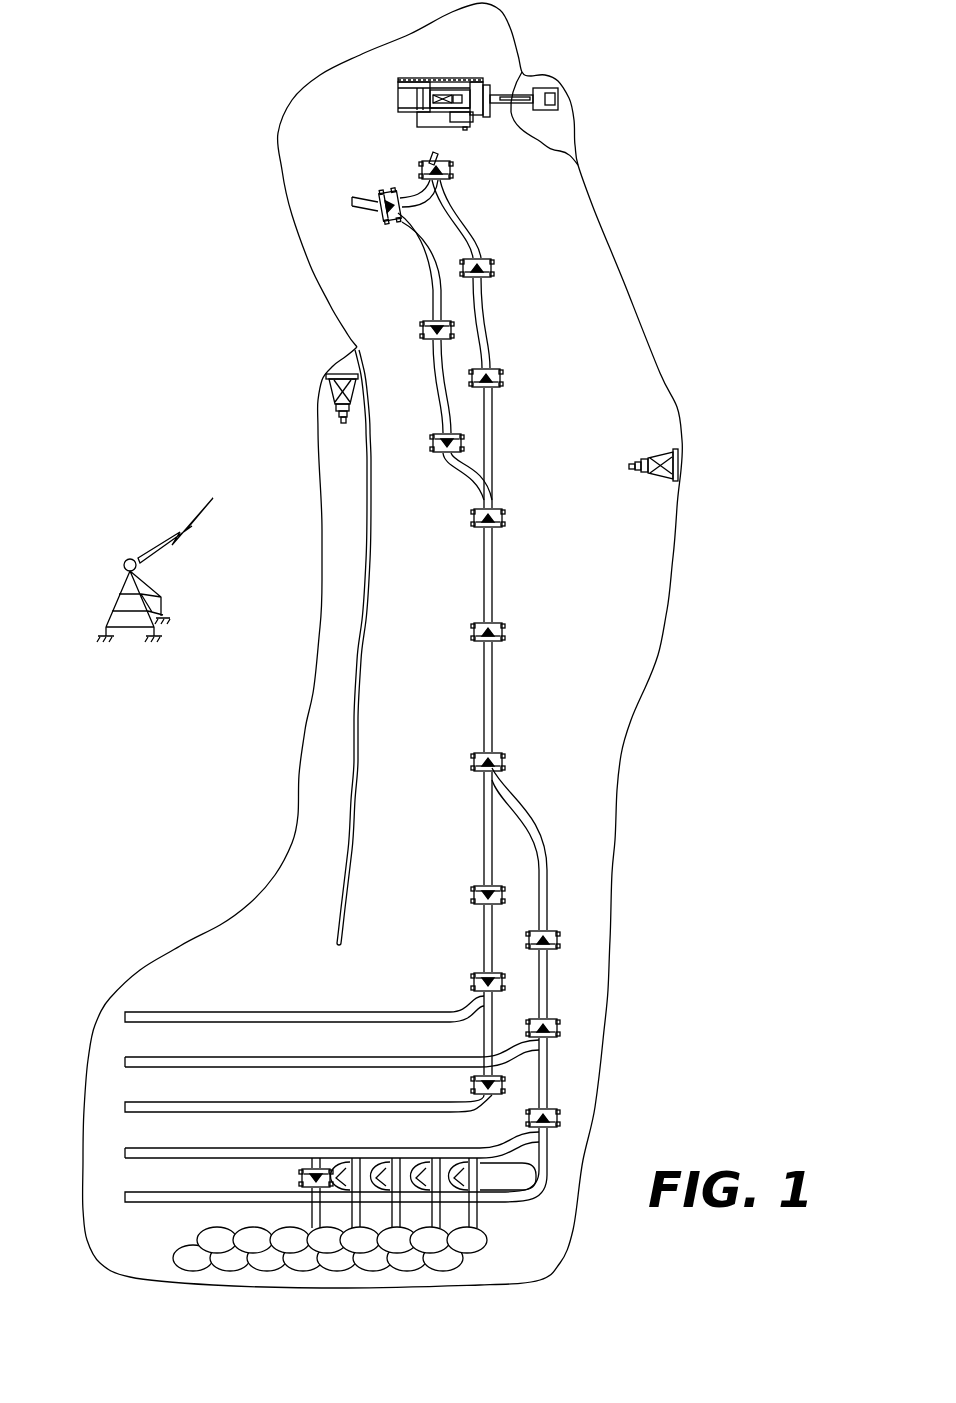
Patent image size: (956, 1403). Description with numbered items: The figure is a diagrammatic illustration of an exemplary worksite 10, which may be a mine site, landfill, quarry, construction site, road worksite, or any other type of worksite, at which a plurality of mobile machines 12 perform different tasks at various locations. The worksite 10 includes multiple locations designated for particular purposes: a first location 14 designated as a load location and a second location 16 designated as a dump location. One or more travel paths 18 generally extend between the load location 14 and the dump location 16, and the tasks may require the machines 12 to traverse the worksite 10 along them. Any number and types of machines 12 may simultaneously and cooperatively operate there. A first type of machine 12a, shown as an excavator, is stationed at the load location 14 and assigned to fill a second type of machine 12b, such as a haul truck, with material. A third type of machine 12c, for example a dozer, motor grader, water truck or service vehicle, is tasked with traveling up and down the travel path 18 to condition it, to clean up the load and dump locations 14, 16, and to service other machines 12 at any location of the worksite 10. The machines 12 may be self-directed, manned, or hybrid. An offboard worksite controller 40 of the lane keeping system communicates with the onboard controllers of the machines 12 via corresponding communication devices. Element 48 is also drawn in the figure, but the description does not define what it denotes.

The worksite 10 is at (748, 1067).
The mobile machines 12 is at (600, 430).
The first type of machine 12a is at (400, 80).
The second type of machine 12b is at (501, 519).
The third type of machine 12c is at (341, 375).
The first location 14 is at (358, 120).
The second location 16 is at (540, 1243).
The travel path 18 is at (490, 691).
The worksite controller 40 is at (127, 567).
The area 48 is at (544, 149).